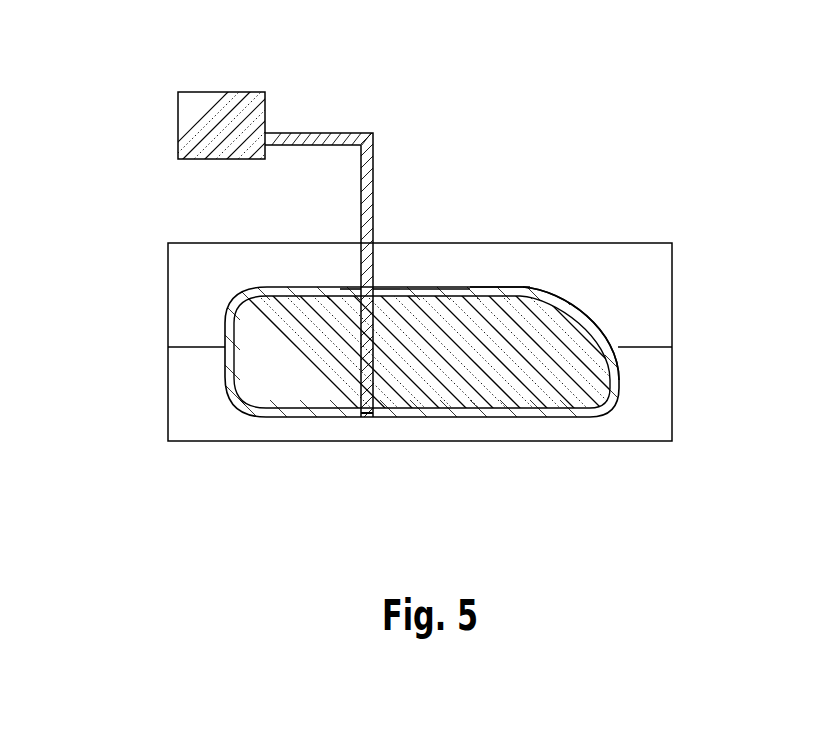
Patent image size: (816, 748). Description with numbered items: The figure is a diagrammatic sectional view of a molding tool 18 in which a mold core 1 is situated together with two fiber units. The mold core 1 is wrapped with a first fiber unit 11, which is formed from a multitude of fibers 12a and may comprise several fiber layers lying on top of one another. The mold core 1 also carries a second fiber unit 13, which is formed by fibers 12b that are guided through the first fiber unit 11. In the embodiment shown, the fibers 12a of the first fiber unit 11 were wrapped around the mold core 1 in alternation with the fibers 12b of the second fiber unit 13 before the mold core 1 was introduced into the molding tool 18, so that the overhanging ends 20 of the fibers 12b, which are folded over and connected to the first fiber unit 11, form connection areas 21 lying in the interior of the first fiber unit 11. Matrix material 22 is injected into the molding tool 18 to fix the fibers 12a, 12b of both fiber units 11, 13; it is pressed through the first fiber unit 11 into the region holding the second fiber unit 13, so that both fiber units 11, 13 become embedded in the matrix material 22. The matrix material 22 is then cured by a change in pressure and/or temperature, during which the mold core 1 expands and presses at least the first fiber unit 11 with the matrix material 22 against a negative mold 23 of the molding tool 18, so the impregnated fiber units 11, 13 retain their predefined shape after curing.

The mold core 1 is at (483, 392).
The first fiber unit 11 is at (422, 407).
The fibers 12a is at (442, 223).
The fibers 12b is at (407, 205).
The second fiber unit 13 is at (352, 483).
The molding tool 18 is at (358, 342).
The overhanging ends 20 is at (244, 230).
The connection area 21 is at (351, 330).
The matrix material 22 is at (347, 145).
The negative mold 23 is at (571, 252).